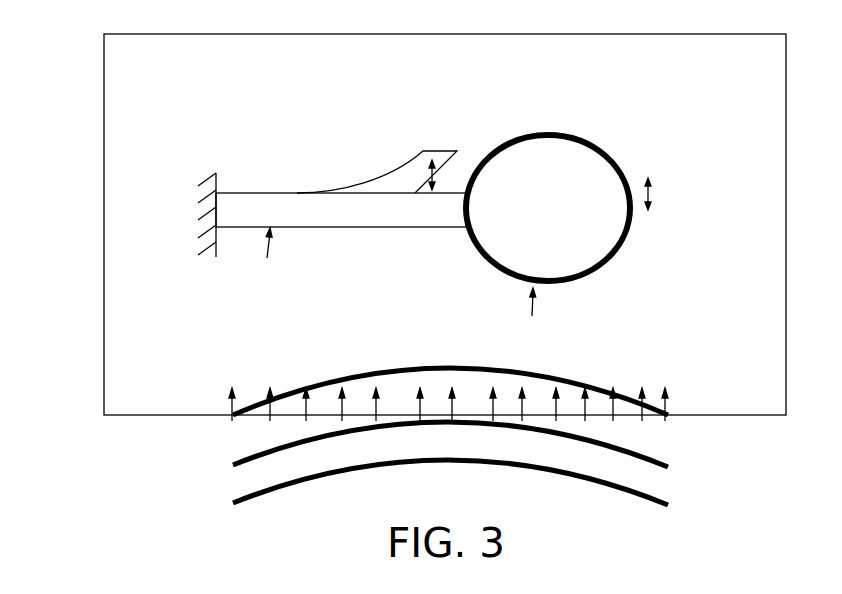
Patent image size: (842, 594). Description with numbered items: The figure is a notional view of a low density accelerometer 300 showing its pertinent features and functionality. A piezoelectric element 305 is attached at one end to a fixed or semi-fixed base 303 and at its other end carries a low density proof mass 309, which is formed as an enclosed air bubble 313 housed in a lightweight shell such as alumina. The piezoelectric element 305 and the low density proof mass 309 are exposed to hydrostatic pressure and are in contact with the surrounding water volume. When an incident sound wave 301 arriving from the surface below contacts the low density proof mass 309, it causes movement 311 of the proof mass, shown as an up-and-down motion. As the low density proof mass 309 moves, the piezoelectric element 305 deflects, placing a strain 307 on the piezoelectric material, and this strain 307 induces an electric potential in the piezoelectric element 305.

The low density accelerometer 300 is at (88, 85).
The incident sound wave 301 is at (217, 480).
The fixed or semi-fixed base 303 is at (203, 212).
The piezoelectric element 305 is at (285, 200).
The strain 307 is at (448, 157).
The low density proof mass 309 is at (573, 133).
The movement 311 is at (657, 172).
The enclosed air bubble 313 is at (577, 218).